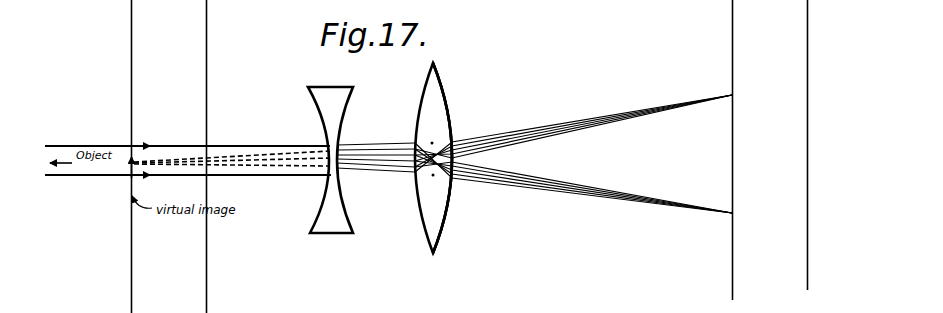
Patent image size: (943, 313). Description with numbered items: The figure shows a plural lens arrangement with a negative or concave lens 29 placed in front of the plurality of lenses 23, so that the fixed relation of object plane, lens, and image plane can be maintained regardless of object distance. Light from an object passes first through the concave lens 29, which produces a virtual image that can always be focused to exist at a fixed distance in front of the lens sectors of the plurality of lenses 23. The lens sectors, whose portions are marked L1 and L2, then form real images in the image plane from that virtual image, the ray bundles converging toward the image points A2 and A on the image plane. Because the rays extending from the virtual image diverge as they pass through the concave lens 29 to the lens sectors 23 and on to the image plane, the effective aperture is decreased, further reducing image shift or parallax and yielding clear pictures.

The concave lens 29 is at (333, 233).
The plurality of lenses 23 is at (446, 233).
The lens L1 surface label L1 is at (451, 110).
The lens L2 surface label L2 is at (452, 210).
The focal point A'2 A2 is at (732, 60).
The focal point A'' A is at (732, 180).